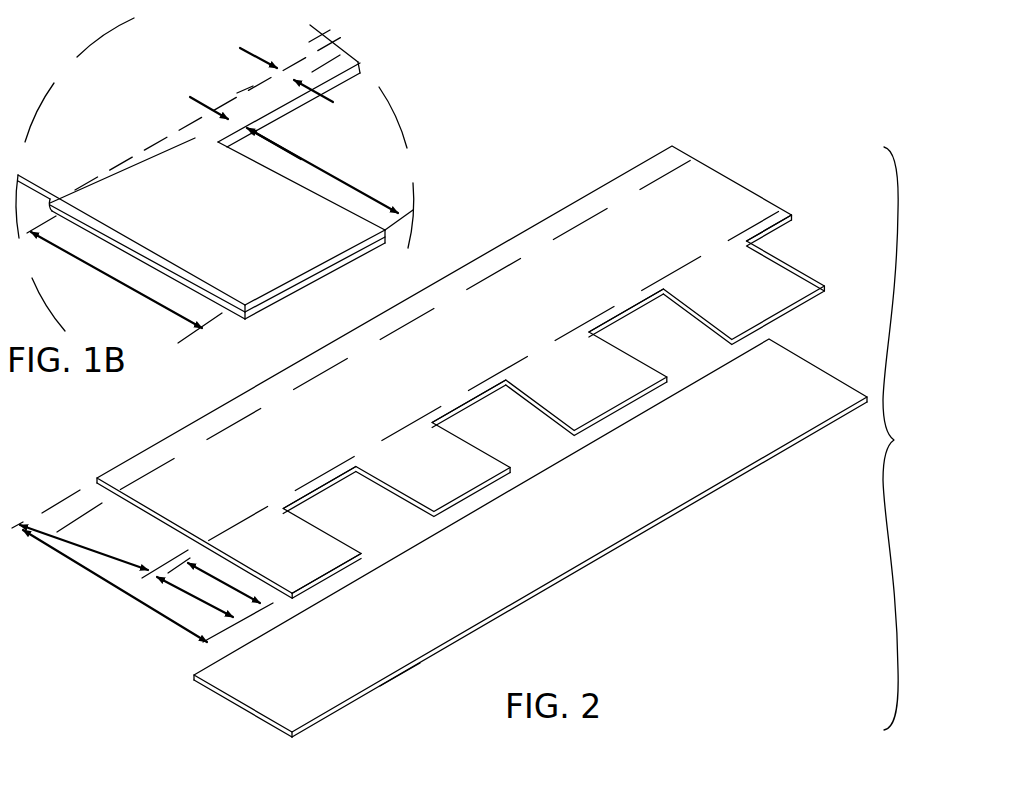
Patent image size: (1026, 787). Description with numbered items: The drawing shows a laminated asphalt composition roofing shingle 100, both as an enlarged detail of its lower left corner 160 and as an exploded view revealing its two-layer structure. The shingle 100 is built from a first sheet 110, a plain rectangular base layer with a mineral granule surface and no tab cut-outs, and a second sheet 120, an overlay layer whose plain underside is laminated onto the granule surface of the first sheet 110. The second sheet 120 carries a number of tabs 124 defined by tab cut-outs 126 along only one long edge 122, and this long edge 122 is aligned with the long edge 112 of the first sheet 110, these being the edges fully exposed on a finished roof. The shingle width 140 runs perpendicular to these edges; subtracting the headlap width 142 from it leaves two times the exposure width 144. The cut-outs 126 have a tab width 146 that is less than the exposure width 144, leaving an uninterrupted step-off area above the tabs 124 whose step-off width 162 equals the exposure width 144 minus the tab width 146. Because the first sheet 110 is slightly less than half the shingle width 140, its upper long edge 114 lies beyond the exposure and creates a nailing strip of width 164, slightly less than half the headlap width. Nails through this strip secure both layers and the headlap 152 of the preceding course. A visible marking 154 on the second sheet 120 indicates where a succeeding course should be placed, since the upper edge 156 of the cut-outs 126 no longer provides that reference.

In FIG. 2, the laminated asphalt composition roofing shingle 100 is at (907, 438).
In FIG. 2, the first sheet 110 is at (822, 368).
In FIG. 2, the long edge of the first sheet 112 is at (400, 672).
In FIG. 1B, the long edge of the first sheet near the middle of the second sheet 114 is at (237, 93).
In FIG. 2, the second sheet 120 is at (733, 180).
In FIG. 2, the long edge of the second sheet 122 is at (323, 574).
In FIG. 1B, the tabs 124 is at (235, 218).
In FIG. 2, the tabs 124 is at (298, 558).
In FIG. 1B, the tab cut-outs 126 is at (382, 135).
In FIG. 2, the tab cut-outs 126 is at (805, 250).
In FIG. 2, the shingle width 140 is at (175, 623).
In FIG. 2, the headlap width 142 is at (50, 513).
In FIG. 1B, the exposure width 144 is at (171, 313).
In FIG. 2, the exposure width 144 is at (115, 558).
In FIG. 1B, the tab width 146 is at (357, 194).
In FIG. 2, the tab width 146 is at (227, 592).
In FIG. 1B, the headlap 152 is at (157, 162).
In FIG. 2, the headlap 152 is at (145, 477).
In FIG. 2, the visible marking 154 is at (232, 527).
In FIG. 2, the upper edge of the tab cut-outs 156 is at (289, 497).
In FIG. 1B, the lower left corner 160 is at (396, 116).
In FIG. 1B, the step-off width 162 is at (238, 119).
In FIG. 1B, the nailing strip width 164 is at (287, 76).